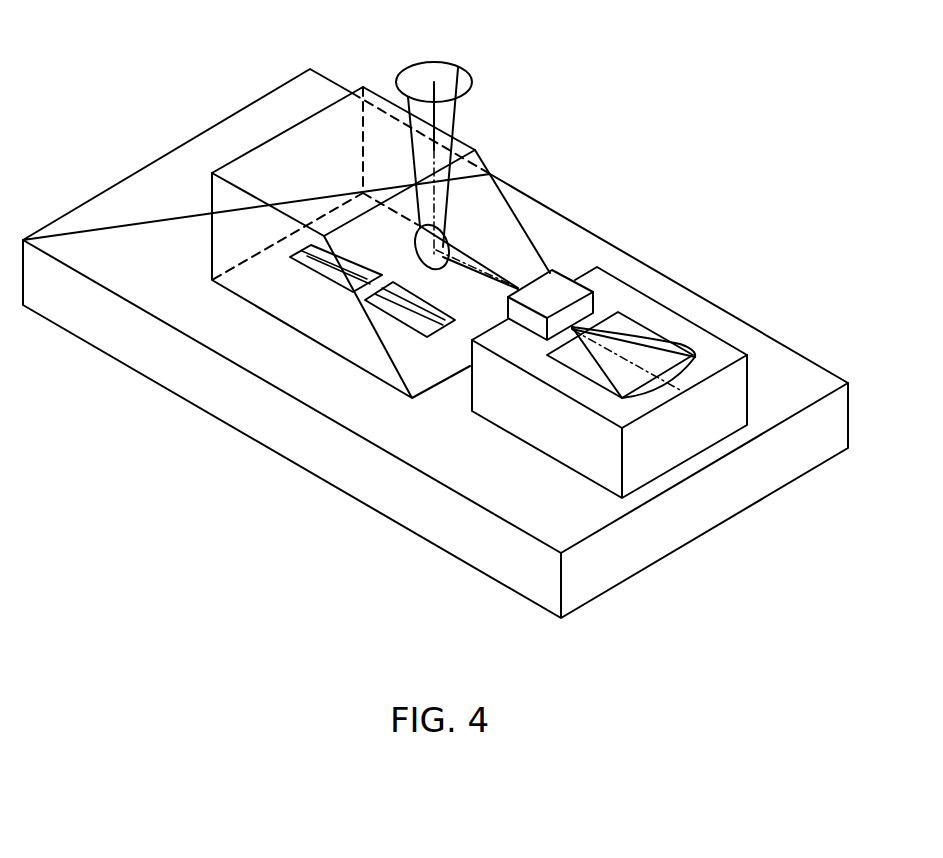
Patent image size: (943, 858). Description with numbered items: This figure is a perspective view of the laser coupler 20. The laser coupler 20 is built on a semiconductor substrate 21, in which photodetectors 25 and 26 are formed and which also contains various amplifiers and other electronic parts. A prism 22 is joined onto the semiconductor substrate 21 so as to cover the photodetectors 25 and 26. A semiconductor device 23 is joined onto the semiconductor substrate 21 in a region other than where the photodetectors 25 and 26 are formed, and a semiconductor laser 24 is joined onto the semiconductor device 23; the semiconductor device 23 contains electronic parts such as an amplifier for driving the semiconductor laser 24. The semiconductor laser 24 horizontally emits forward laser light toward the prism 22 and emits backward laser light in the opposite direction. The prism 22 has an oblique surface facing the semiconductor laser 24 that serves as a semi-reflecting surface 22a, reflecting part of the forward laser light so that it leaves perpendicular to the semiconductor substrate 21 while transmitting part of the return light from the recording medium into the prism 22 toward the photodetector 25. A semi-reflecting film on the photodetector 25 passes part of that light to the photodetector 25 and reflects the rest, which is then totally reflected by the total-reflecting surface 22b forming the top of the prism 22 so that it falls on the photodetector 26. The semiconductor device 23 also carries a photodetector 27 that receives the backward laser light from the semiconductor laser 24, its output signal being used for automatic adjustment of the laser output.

The laser coupler 20 is at (435, 321).
The semiconductor substrate 21 is at (398, 492).
The prism 22 is at (382, 211).
The semi-reflecting surface 22a is at (492, 207).
The total-reflecting surface 22b is at (343, 146).
The semiconductor device 23 is at (690, 438).
The semiconductor laser 24 is at (560, 280).
The photodetector 25 is at (393, 319).
The photodetector 26 is at (318, 277).
The photodetector 27 is at (640, 323).